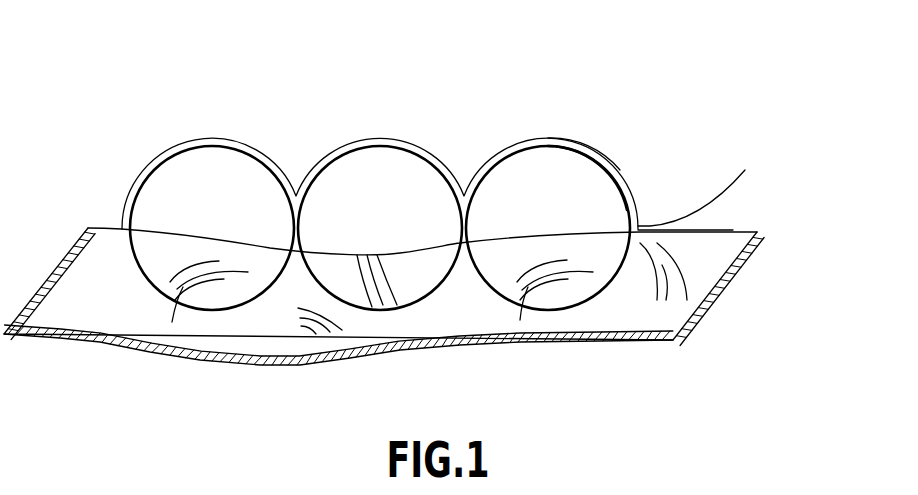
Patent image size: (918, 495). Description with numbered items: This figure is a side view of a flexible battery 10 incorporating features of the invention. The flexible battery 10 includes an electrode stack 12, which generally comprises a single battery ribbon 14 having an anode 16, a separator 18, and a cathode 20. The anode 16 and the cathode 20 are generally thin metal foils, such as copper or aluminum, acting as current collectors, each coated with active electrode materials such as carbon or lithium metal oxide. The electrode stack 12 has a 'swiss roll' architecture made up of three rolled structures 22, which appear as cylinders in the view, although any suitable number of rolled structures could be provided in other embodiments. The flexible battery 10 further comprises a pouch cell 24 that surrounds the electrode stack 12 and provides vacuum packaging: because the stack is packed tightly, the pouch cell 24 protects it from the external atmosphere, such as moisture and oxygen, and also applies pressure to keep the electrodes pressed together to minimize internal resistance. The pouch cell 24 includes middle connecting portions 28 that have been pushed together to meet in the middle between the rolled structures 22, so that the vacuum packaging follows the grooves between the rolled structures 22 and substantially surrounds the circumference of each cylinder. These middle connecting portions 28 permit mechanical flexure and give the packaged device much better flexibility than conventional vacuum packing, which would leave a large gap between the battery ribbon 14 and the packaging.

The flexible battery 10 is at (97, 50).
The electrode stack 12 is at (152, 62).
The battery ribbon 14 is at (638, 217).
The anode 16 is at (592, 225).
The separator 18 is at (572, 203).
The cathode 20 is at (553, 163).
The rolled structures 22 is at (252, 218).
The pouch cell 24 is at (699, 185).
The middle connecting portions 28 is at (295, 161).